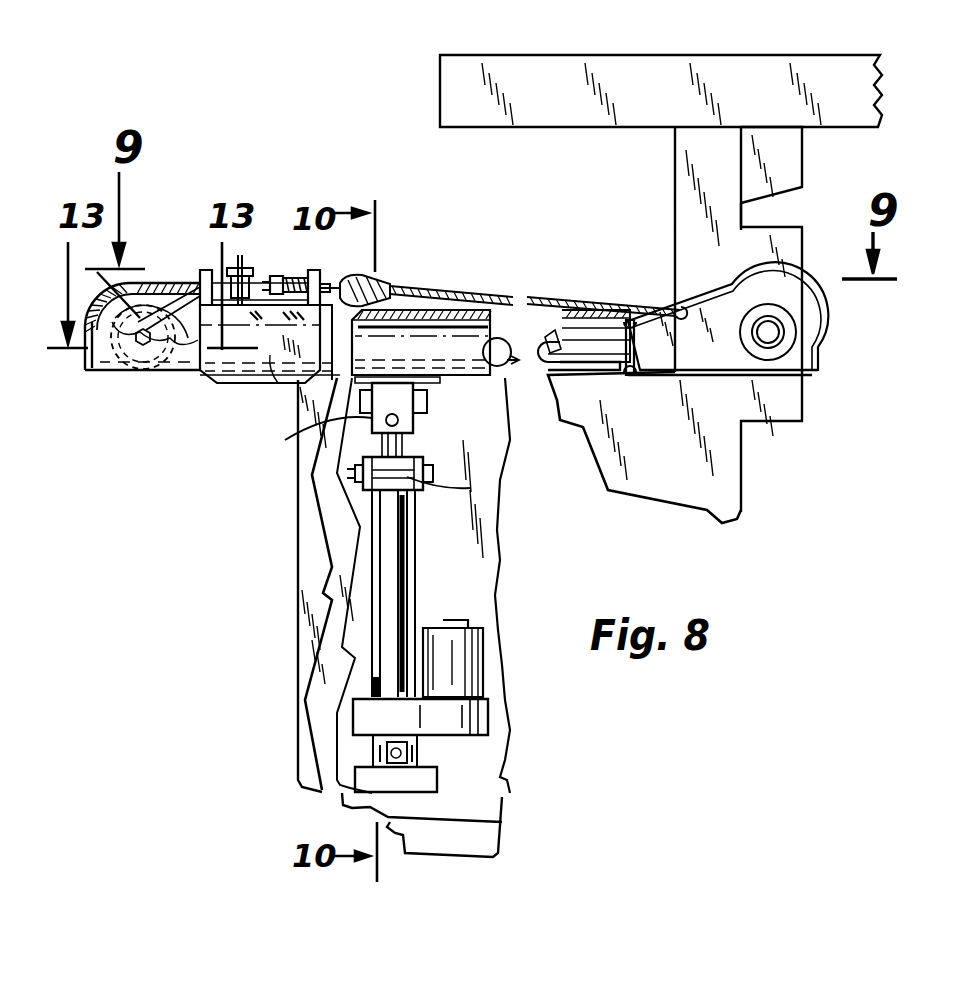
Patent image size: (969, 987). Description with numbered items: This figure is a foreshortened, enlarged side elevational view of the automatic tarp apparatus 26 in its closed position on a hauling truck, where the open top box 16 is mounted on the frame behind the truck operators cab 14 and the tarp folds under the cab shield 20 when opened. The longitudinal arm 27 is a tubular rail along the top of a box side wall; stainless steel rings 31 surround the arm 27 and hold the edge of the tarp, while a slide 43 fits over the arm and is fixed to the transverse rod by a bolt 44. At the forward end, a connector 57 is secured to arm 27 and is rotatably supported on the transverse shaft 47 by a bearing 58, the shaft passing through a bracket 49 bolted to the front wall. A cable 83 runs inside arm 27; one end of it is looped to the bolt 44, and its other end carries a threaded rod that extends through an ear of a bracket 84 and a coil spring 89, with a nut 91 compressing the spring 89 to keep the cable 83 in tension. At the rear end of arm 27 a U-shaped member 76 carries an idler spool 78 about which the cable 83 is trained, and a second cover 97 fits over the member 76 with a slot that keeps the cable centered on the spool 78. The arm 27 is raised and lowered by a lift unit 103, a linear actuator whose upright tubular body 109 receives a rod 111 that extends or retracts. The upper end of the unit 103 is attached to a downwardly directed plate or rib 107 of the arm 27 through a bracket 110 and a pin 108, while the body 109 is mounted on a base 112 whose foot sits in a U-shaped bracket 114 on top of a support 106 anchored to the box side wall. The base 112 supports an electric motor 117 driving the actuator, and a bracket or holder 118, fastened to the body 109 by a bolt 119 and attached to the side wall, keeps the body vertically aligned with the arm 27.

The truck operators cab 14 is at (214, 352).
The open top box 16 is at (432, 76).
The cab shield 20 is at (549, 72).
The tarp apparatus 26 is at (461, 283).
The arm 27 is at (571, 347).
The ring 31 is at (633, 372).
The slide 43 is at (268, 352).
The bolt 44 is at (246, 268).
The transverse shaft 47 is at (788, 314).
The bracket 49 is at (752, 242).
The second connector 57 is at (744, 356).
The bearing 58 is at (790, 334).
The U-shaped member 76 is at (110, 370).
The idler spool 78 is at (109, 276).
The cable 83 is at (178, 288).
The bracket 84 is at (207, 270).
The coil spring 89 is at (299, 278).
The nut 91 is at (275, 276).
The second cover 97 is at (85, 365).
The lift unit 103 is at (475, 562).
The support 106 is at (415, 778).
The plate or rib 107 is at (428, 381).
The pin 108 is at (398, 420).
The tubular body 109 is at (388, 580).
The bracket 110 is at (285, 440).
The rod 111 is at (410, 440).
The base 112 is at (455, 719).
The U-shaped bracket 114 is at (420, 753).
The motor 117 is at (455, 657).
The bracket or holder 118 is at (416, 492).
The bolt 119 is at (470, 488).